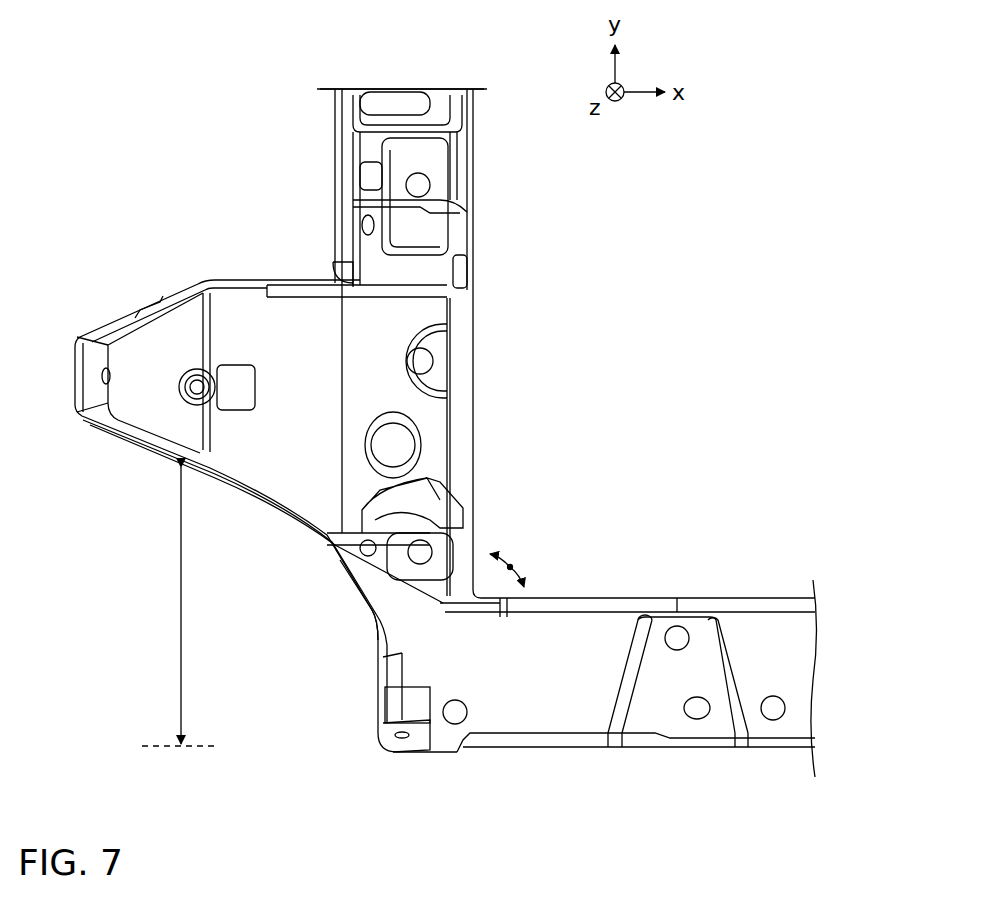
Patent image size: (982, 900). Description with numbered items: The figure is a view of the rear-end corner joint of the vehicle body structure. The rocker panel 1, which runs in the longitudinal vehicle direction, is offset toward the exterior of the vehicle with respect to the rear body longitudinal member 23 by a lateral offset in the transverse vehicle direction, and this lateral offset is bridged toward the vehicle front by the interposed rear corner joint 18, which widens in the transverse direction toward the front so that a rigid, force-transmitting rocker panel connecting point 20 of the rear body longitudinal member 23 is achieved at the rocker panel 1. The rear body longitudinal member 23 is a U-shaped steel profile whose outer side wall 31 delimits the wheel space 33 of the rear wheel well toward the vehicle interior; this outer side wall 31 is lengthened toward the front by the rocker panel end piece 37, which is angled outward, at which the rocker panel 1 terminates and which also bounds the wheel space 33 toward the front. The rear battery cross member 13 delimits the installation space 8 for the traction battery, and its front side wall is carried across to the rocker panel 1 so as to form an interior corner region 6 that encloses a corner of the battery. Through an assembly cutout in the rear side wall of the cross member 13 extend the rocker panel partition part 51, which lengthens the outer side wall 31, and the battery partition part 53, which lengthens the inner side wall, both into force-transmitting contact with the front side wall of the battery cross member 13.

The rocker panel 1 is at (793, 675).
The interior corner region 6 is at (512, 565).
The installation space 8 is at (521, 393).
The rear battery cross member 13 is at (483, 83).
The rear corner joint 18 is at (356, 736).
The rocker panel connecting point 20 is at (333, 594).
The rear body longitudinal member 23 is at (196, 276).
The outer side wall 31 is at (248, 483).
The wheel space 33 is at (240, 680).
The rocker panel end piece 37 is at (379, 697).
The rocker panel partition part 51 is at (359, 540).
The battery partition part 53 is at (405, 285).